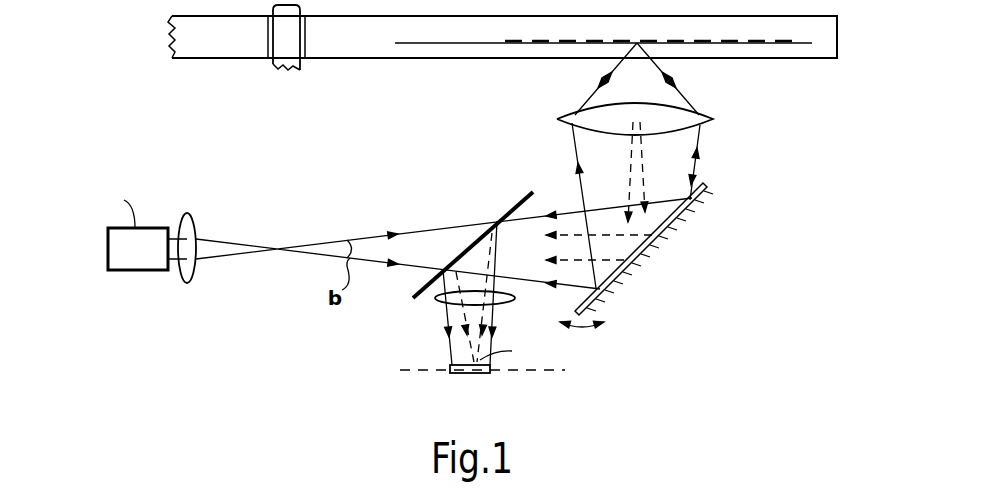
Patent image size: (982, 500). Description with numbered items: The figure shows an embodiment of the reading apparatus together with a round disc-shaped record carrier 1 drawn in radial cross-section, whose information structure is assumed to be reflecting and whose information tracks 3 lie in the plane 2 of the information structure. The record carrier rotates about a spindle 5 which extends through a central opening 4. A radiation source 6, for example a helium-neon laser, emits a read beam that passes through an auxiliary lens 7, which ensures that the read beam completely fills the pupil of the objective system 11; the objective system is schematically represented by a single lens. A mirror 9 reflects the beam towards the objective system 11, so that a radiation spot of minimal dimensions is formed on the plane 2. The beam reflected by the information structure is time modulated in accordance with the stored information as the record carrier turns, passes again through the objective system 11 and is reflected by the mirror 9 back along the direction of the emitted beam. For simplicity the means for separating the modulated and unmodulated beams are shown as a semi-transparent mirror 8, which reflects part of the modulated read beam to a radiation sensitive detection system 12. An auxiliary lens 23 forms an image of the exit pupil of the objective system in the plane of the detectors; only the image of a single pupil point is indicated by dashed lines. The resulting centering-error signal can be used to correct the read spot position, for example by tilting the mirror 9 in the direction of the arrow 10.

The record carrier 1 is at (358, 44).
The plane of the information structure 2 is at (429, 44).
The information tracks 3 is at (533, 44).
The central opening 4 is at (305, 44).
The spindle 5 is at (272, 62).
The radiation source 6 is at (140, 263).
The auxiliary lens 7 is at (192, 270).
The semi-transparent mirror 8 is at (421, 290).
The mirror 9 is at (615, 279).
The arrow 10 is at (582, 339).
The objective system 11 is at (582, 108).
The radiation sensitive detection system 12 is at (445, 392).
The auxiliary lens 23 is at (442, 306).